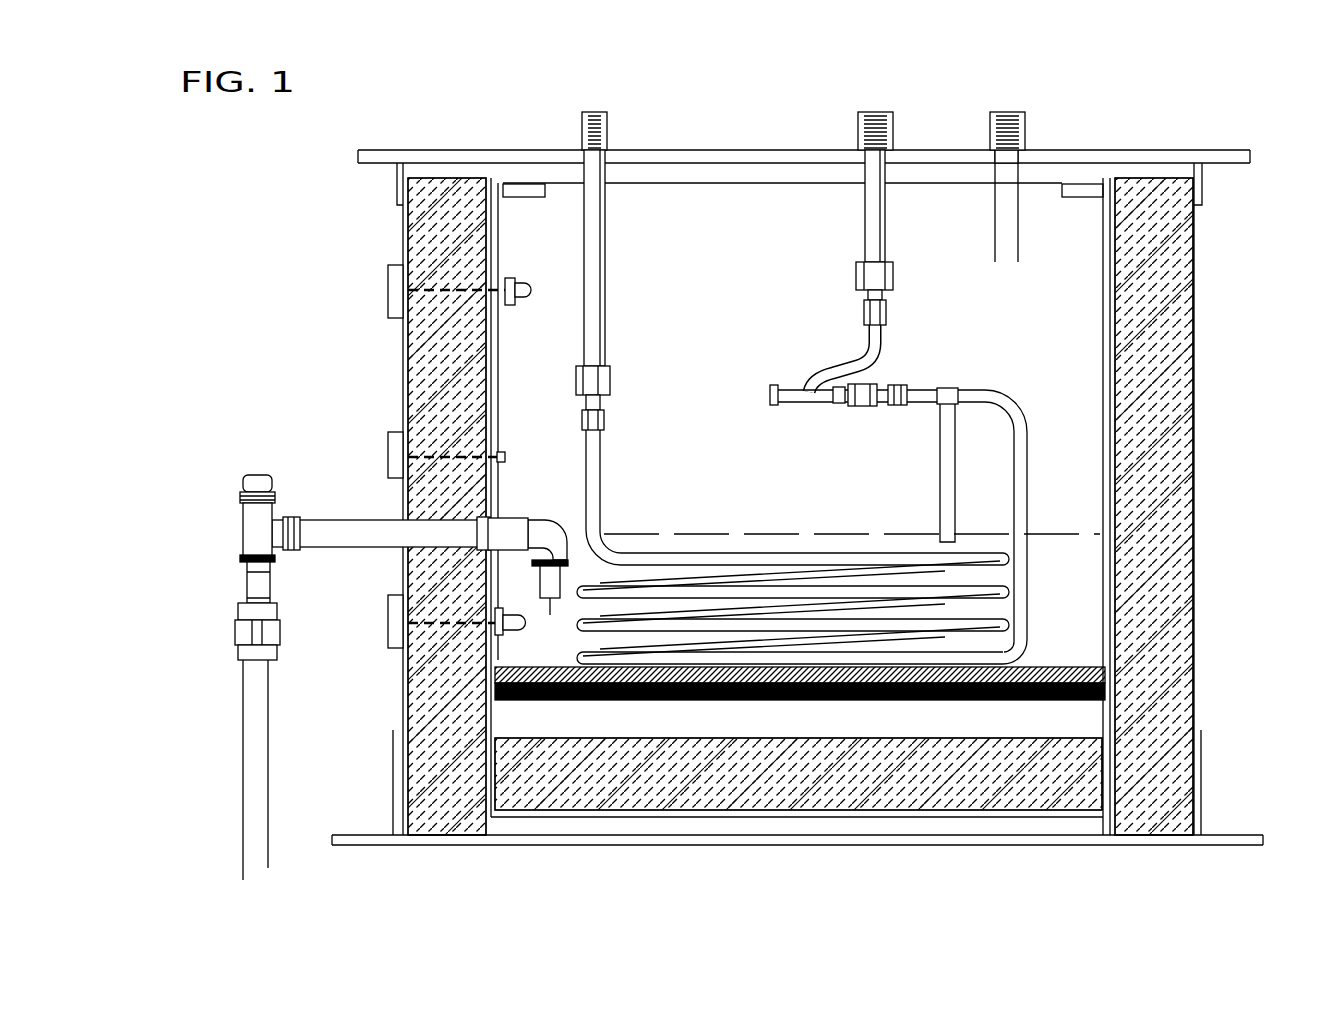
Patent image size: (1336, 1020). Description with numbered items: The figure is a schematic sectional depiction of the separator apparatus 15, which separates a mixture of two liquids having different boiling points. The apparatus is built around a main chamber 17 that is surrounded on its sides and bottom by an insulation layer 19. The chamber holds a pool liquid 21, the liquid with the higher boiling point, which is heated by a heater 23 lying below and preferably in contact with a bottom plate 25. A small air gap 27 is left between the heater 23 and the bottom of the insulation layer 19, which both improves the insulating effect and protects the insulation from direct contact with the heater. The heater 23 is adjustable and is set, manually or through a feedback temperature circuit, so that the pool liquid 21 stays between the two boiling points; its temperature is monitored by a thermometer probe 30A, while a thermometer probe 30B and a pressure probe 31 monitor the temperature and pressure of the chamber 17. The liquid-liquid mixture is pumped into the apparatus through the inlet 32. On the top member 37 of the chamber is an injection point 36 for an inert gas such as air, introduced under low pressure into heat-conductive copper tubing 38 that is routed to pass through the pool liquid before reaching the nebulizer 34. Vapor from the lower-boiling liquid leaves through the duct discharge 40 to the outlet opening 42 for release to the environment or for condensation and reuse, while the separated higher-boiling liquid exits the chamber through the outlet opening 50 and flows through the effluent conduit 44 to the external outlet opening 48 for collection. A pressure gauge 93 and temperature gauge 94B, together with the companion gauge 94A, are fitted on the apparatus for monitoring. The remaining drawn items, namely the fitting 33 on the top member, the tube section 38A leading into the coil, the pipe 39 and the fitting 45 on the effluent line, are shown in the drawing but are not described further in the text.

The separator apparatus 15 is at (1323, 60).
The main chamber 17 is at (1065, 310).
The insulation layer 19 is at (1155, 450).
The pool liquid 21 is at (1065, 607).
The heater 23 is at (693, 700).
The bottom plate 25 is at (850, 700).
The air gap 27 is at (1030, 718).
The thermometer probe 30A is at (510, 648).
The thermometer probe 30B is at (515, 312).
The pressure probe 31 is at (505, 457).
The inlet 32 is at (895, 116).
The inlet pipe 33 is at (612, 118).
The nebulizer 34 is at (790, 388).
The injection point 36 is at (800, 405).
The top member 37 is at (715, 150).
The tubing 38 is at (600, 475).
The coil inlet tube 38A is at (922, 388).
The thermowell pipe 39 is at (938, 475).
The duct discharge 40 is at (995, 237).
The outlet opening 42 is at (1012, 108).
The effluent conduit 44 is at (510, 518).
The tee fitting 45 is at (238, 485).
The outlet opening 48 is at (250, 868).
The outlet opening 50 is at (550, 607).
The pressure gauge 93 is at (386, 453).
The lower bracket 94A is at (386, 617).
The temperature gauge 94B is at (386, 290).